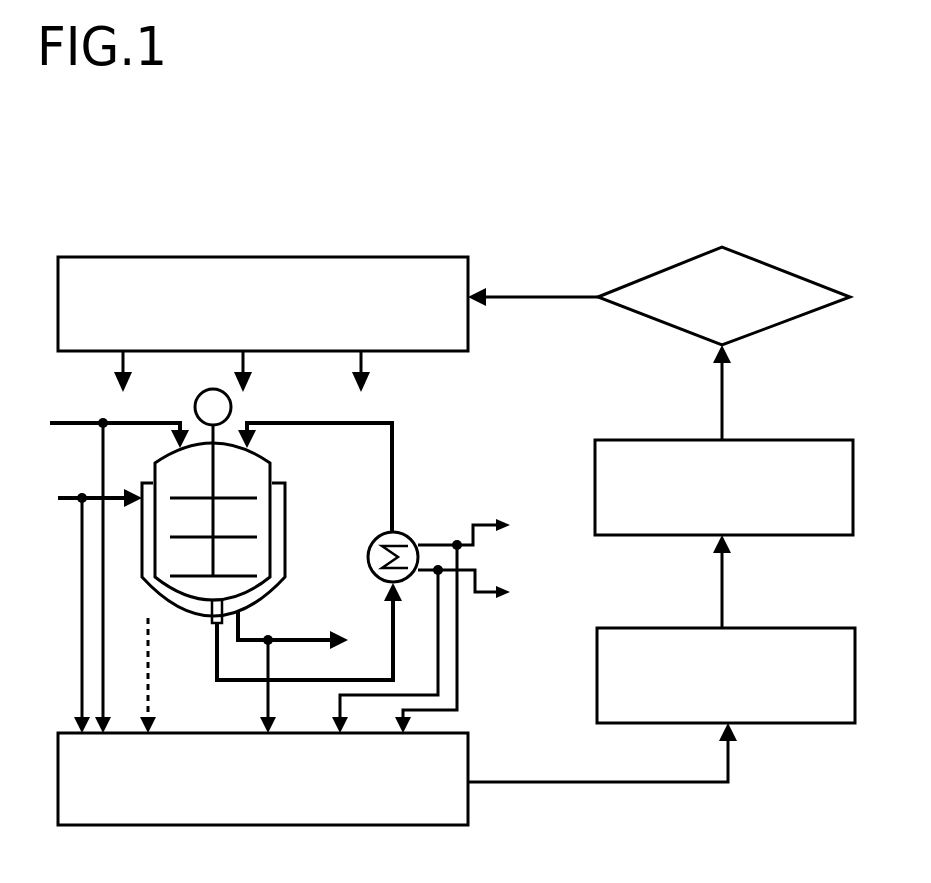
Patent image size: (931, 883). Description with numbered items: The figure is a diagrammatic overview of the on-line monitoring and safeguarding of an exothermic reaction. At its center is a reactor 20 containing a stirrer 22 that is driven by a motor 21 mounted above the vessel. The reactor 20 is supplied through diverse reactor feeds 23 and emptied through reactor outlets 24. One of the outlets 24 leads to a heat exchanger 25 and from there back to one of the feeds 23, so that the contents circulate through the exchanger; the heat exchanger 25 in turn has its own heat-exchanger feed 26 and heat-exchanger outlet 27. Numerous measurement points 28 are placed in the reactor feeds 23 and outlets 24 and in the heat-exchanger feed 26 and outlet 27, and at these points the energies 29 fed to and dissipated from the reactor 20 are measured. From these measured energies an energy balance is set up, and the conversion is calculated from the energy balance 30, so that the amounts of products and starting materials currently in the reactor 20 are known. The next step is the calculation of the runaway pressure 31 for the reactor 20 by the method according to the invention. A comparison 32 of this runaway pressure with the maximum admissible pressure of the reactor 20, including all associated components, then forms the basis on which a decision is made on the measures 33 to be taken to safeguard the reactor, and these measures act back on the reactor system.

The reactor 20 is at (213, 533).
The motor 21 is at (195, 404).
The stirrer 22 is at (240, 500).
The reactor feeds 23 is at (221, 476).
The reactor outlets 24 is at (266, 637).
The heat exchanger 25 is at (368, 557).
The heat-exchanger feed 26 is at (482, 525).
The heat-exchanger outlet 27 is at (482, 587).
The measurement points 28 is at (92, 431).
The energies 29 is at (397, 774).
The energy balance / conversion calculation 30 is at (726, 629).
The runaway pressure calculation 31 is at (724, 440).
The comparison 32 is at (659, 296).
The measures 33 is at (263, 324).